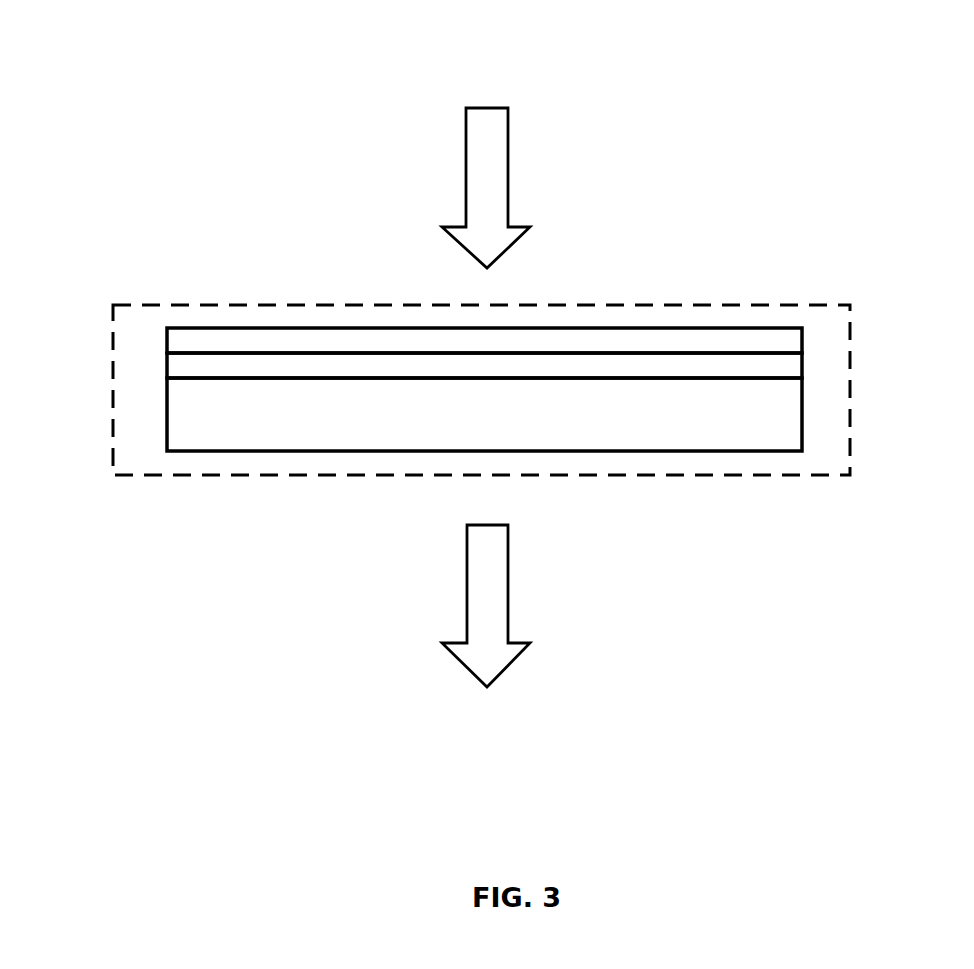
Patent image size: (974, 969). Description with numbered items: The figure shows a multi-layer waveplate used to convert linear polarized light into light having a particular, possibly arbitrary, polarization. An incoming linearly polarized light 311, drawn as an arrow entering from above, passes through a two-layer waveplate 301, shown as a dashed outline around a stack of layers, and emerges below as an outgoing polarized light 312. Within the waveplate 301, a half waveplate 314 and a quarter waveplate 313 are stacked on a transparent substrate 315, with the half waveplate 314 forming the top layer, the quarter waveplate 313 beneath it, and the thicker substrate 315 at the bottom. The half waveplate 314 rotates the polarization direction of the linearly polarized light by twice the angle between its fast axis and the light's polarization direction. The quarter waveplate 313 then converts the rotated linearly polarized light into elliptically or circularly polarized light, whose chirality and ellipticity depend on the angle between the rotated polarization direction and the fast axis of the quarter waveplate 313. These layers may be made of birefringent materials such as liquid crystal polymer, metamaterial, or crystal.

The two-layer waveplate 301 is at (752, 305).
The incoming linearly polarized light 311 is at (486, 154).
The outgoing polarized light 312 is at (486, 645).
The quarter waveplate 313 is at (167, 365).
The half waveplate 314 is at (802, 338).
The transparent substrate 315 is at (802, 438).